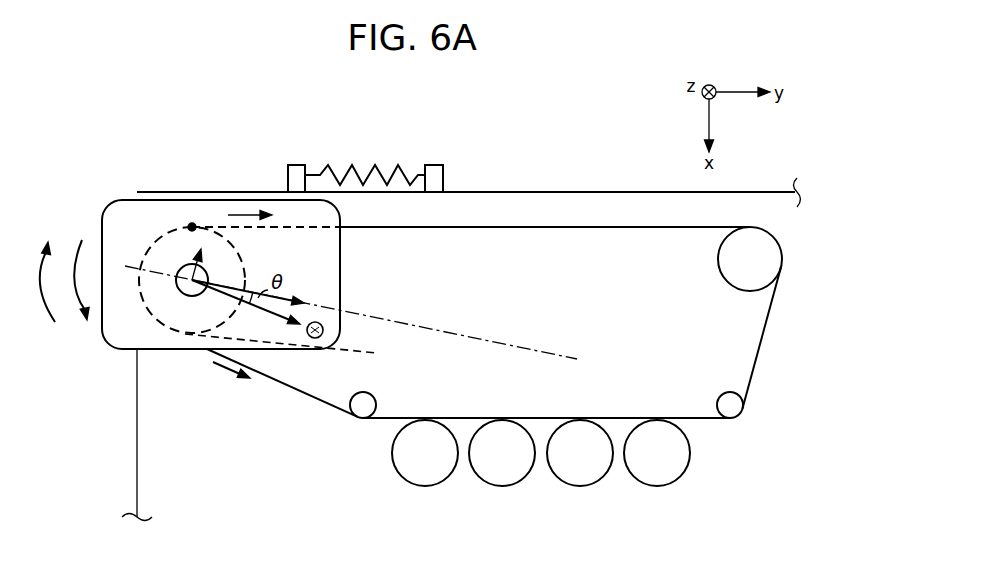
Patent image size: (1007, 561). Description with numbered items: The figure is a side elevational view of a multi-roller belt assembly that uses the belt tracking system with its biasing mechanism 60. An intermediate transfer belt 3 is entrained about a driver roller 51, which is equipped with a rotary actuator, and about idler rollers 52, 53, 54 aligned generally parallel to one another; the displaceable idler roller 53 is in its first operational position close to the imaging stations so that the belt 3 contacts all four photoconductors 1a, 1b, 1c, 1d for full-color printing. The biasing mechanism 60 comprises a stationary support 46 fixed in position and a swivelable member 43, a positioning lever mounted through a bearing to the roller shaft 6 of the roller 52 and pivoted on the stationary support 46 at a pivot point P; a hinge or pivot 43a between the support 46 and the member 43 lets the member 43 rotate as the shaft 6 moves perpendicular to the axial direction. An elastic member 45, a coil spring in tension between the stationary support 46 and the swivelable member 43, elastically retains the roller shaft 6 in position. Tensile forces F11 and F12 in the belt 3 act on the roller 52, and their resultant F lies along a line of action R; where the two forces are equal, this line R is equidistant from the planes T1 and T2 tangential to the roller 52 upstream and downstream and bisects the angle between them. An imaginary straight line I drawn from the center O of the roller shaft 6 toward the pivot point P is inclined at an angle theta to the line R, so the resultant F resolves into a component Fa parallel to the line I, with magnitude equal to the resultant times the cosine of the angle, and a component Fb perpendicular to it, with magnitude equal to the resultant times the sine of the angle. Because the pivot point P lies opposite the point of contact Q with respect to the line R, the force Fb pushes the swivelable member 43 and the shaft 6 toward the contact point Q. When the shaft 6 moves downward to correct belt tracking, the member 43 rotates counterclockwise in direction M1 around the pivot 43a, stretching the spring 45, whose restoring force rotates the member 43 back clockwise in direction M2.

The biasing mechanism 60 is at (165, 165).
The elastic member 45 is at (385, 167).
The stationary support 46 is at (595, 192).
The idler roller 52 is at (155, 247).
The roller shaft 6 is at (192, 297).
The swivelable member 43 is at (113, 352).
The pivot 43a is at (312, 339).
The idler roller 53 is at (378, 404).
The idler roller 54 is at (717, 400).
The driver roller 51 is at (718, 259).
The intermediate transfer belt 3 is at (532, 228).
The photoconductor 1a is at (657, 487).
The photoconductor 1b is at (580, 487).
The photoconductor 1c is at (502, 487).
The photoconductor 1d is at (425, 487).
The tangential plane T1 is at (378, 228).
The tangential plane T2 is at (298, 394).
The pivot point P is at (322, 325).
The point of contact Q is at (193, 223).
The center of the roller shaft O is at (177, 291).
The line of action R is at (531, 347).
The imaginary straight line I is at (360, 349).
The resultant force F is at (250, 290).
The force component Fa is at (246, 307).
The force component Fb is at (213, 264).
The tensile force F11 is at (269, 215).
The tensile force F12 is at (222, 379).
The first rotational direction M1 is at (80, 267).
The second rotational direction M2 is at (48, 268).